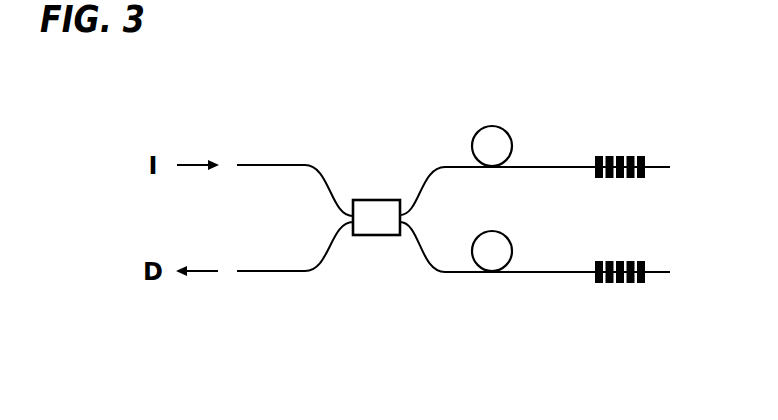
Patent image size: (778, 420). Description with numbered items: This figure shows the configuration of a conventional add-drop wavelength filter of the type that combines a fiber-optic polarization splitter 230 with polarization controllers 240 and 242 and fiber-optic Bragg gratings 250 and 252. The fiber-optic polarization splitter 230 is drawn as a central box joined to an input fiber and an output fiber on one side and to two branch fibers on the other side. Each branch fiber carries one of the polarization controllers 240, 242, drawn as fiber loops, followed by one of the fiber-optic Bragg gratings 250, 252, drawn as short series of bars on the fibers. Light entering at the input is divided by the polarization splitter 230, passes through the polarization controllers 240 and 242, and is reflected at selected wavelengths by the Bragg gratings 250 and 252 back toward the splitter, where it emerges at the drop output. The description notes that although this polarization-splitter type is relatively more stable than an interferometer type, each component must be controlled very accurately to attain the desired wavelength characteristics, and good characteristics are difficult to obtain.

The fiber-optic polarization splitter 230 is at (373, 200).
The polarization controller 240 is at (490, 126).
The polarization controller 242 is at (493, 272).
The fiber-optic Bragg grating 250 is at (620, 155).
The fiber-optic Bragg grating 252 is at (625, 283).